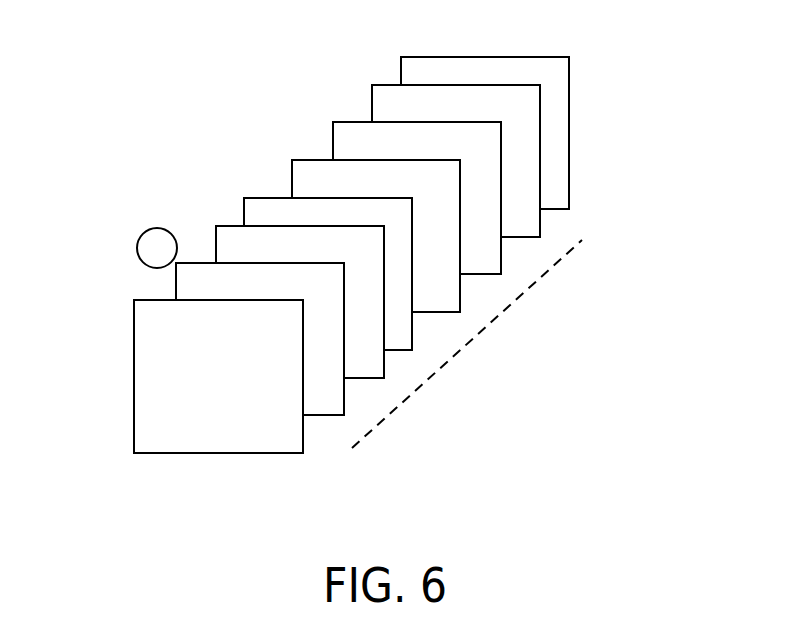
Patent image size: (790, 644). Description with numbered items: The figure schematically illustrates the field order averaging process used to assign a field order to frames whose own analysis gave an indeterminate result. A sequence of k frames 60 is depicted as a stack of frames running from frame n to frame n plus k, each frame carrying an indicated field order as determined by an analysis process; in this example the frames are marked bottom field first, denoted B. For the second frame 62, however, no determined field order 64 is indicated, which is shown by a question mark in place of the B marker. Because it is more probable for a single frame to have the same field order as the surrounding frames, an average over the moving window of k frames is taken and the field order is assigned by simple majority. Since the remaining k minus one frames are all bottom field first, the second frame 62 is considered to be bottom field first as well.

The sequence of k frames 60 is at (434, 257).
The second frame 62 is at (343, 338).
The no determined field order 64 is at (125, 240).